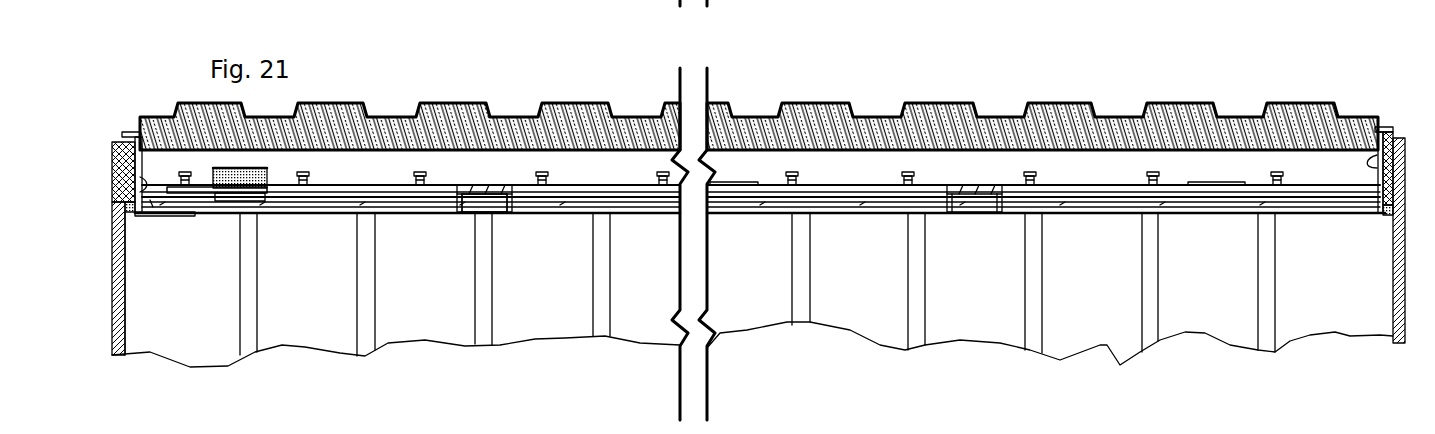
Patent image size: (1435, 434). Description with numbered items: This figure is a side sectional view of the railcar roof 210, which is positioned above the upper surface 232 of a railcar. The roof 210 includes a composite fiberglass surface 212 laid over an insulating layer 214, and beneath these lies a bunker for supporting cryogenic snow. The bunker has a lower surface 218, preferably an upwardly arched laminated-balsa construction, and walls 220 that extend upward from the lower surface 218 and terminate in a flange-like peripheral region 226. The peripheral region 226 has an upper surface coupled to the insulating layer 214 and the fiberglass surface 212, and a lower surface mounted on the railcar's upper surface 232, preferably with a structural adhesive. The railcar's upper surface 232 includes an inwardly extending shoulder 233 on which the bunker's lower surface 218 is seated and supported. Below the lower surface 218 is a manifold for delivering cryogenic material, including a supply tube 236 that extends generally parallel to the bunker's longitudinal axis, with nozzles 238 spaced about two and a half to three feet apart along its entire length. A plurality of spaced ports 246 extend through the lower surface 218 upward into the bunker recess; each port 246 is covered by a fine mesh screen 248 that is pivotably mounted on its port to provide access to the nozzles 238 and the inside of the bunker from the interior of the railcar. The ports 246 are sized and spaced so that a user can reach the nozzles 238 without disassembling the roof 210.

The roof 210 is at (1105, 84).
The composite fiberglass surface 212 is at (939, 98).
The insulating layer 214 is at (1301, 124).
The lower surface 218 is at (150, 204).
The walls 220 is at (108, 156).
The peripheral region 226 is at (114, 140).
The upper surface of railcar 232 is at (106, 197).
The inwardly extending shoulder 233 is at (143, 218).
The supply tube 236 is at (233, 213).
The nozzles 238 is at (414, 183).
The ports 246 is at (470, 206).
The screen 248 is at (462, 186).